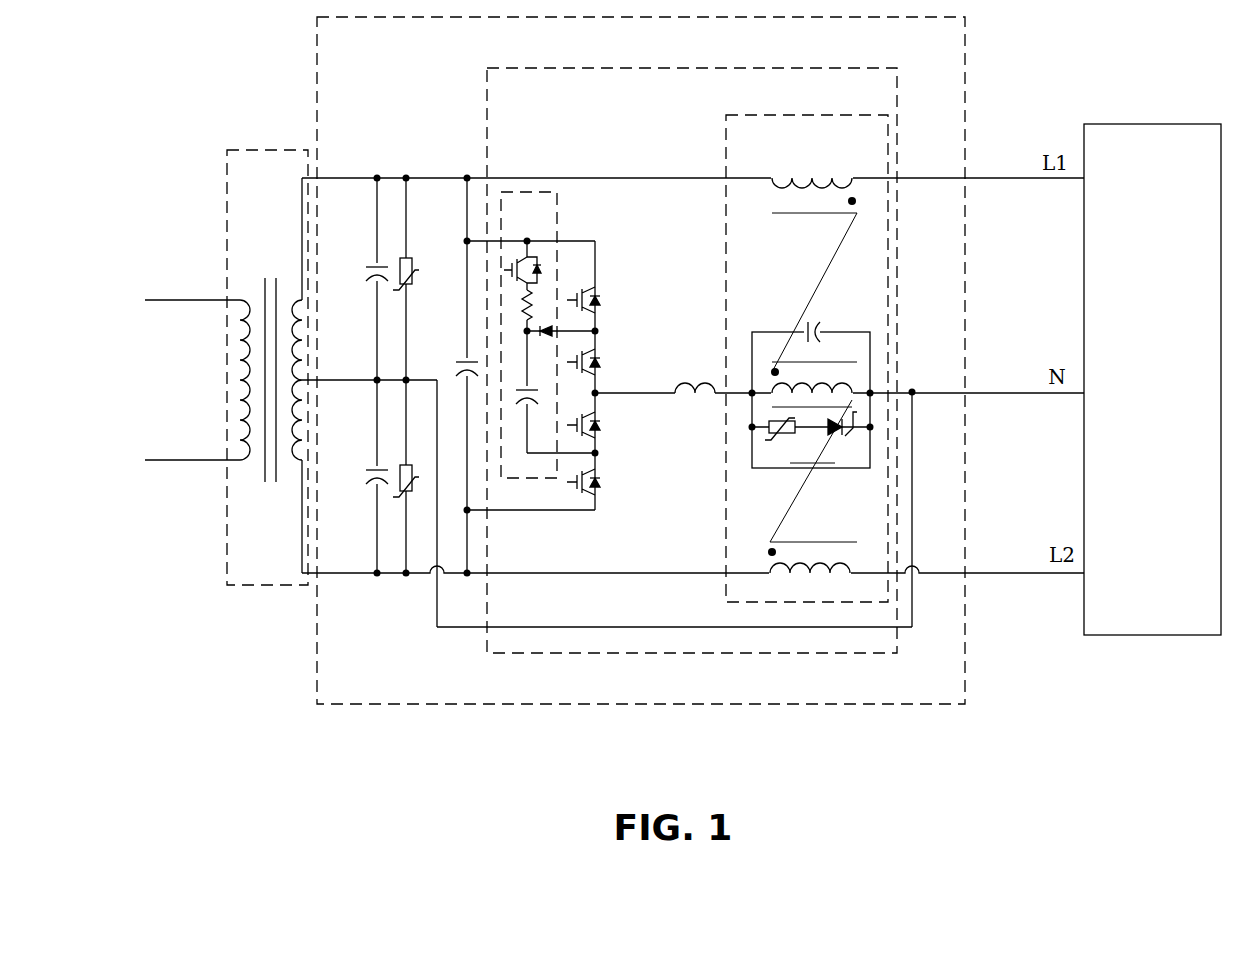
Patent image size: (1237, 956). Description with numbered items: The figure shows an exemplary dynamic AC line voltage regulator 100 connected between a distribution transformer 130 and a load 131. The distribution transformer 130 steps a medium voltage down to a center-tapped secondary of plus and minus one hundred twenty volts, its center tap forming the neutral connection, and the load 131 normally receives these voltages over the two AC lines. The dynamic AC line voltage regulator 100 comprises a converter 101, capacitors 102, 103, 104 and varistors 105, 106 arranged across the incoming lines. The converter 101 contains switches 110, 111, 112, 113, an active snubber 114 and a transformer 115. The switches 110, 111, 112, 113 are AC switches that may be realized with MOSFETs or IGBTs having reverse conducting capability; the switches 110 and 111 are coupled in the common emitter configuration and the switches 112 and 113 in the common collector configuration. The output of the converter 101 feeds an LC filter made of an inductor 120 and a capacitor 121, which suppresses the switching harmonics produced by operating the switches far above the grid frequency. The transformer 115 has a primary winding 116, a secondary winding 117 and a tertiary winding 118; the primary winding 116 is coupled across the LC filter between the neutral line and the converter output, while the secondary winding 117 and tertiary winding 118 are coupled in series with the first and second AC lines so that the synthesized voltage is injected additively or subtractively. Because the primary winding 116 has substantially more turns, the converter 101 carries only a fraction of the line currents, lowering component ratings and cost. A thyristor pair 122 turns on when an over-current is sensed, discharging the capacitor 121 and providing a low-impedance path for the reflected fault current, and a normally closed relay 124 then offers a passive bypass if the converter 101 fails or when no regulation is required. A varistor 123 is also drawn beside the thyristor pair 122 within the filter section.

The dynamic AC line voltage regulator 100 is at (622, 57).
The converter 101 is at (672, 98).
The capacitor 102 is at (372, 264).
The capacitor 103 is at (372, 467).
The capacitor 104 is at (462, 366).
The varistor 105 is at (414, 264).
The varistor 106 is at (412, 467).
The switch 110 is at (600, 301).
The switch 111 is at (600, 361).
The switch 112 is at (602, 438).
The switch 113 is at (602, 494).
The active snubber 114 is at (511, 227).
The transformer 115 is at (790, 141).
The primary winding 116 is at (856, 382).
The secondary winding 117 is at (785, 200).
The tertiary winding 118 is at (852, 560).
The inductor 120 is at (700, 396).
The capacitor 121 is at (811, 322).
The thyristor pair 122 is at (842, 443).
The varistor 123 is at (782, 445).
The relay 124 is at (814, 478).
The distribution transformer 130 is at (250, 176).
The load 131 is at (1134, 405).